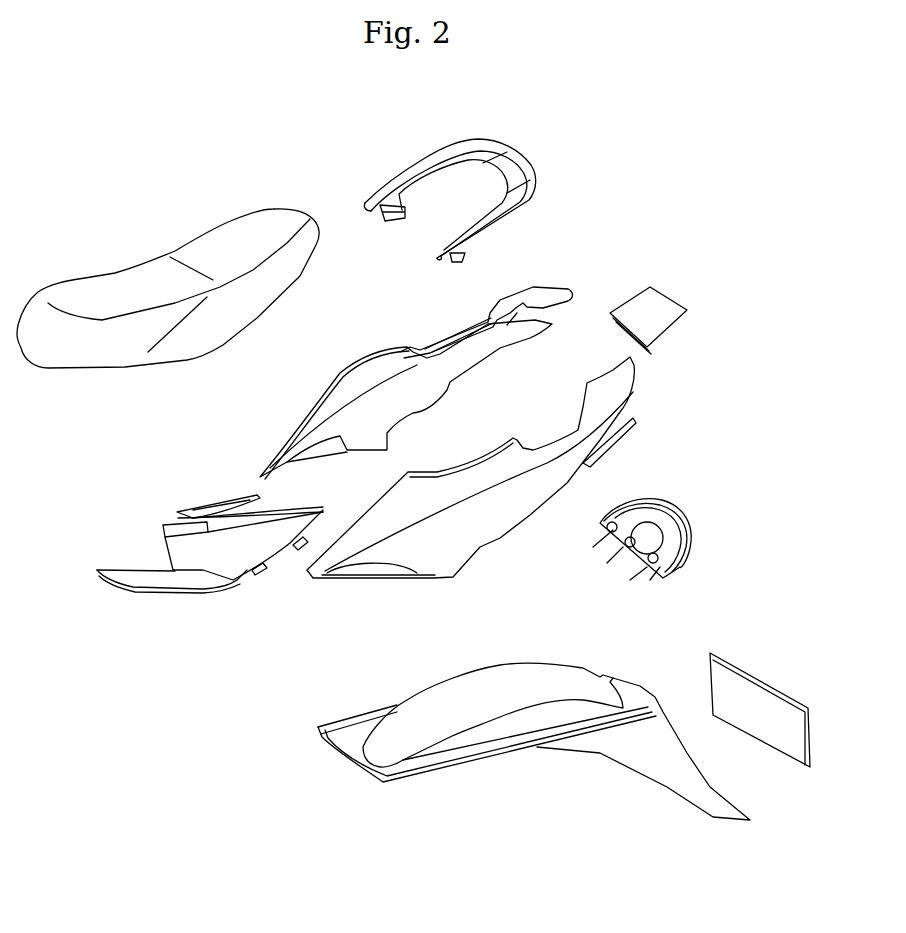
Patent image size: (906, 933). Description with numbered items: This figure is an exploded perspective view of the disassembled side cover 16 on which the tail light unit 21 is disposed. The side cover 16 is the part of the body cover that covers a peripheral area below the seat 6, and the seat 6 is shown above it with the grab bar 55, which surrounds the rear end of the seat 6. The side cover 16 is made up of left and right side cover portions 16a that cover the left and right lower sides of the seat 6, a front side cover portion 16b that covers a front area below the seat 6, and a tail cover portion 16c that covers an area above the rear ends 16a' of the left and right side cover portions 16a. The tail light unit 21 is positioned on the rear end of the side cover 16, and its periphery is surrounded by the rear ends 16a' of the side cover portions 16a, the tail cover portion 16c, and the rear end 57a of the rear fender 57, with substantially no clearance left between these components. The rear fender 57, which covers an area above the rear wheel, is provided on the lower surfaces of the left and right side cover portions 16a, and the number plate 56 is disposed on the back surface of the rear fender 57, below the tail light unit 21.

The seat 6 is at (168, 263).
The grab bar 55 is at (452, 173).
The side cover 16 is at (402, 442).
The left and right side cover portions 16a is at (448, 435).
The rear ends of left and right side cover portions 16a' is at (564, 300).
The front side cover portion 16b is at (210, 537).
The tail cover portion 16c is at (669, 293).
The tail light unit 21 is at (664, 507).
The rear fender 57 is at (487, 704).
The rear end of rear fender 57a is at (643, 730).
The number plate 56 is at (763, 699).